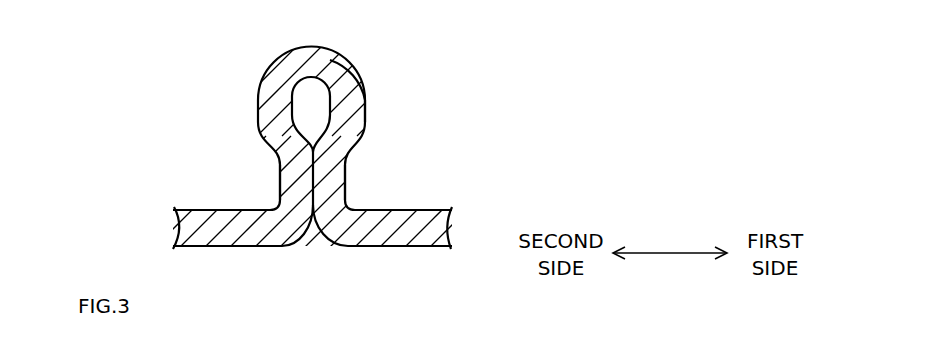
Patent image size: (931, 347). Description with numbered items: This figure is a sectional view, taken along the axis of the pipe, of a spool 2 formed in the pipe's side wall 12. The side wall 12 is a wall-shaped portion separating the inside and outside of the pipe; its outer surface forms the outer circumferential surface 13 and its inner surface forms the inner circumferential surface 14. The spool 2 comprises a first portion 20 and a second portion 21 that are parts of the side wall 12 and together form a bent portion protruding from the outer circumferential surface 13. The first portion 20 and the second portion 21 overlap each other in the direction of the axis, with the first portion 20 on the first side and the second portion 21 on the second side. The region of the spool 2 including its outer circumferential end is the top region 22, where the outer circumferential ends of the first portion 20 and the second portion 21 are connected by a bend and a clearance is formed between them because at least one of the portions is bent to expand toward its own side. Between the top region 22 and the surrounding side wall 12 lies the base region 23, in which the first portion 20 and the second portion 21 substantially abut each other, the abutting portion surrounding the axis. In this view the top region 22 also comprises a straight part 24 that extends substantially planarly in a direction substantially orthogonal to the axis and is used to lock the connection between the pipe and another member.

The spool 2 is at (383, 57).
The side wall 12 is at (267, 228).
The outer circumferential surface 13 is at (199, 210).
The inner circumferential surface 14 is at (223, 247).
The first portion 20 is at (343, 135).
The second portion 21 is at (285, 146).
The top region 22 is at (257, 67).
The base region 23 is at (352, 181).
The straight part 24 is at (367, 97).